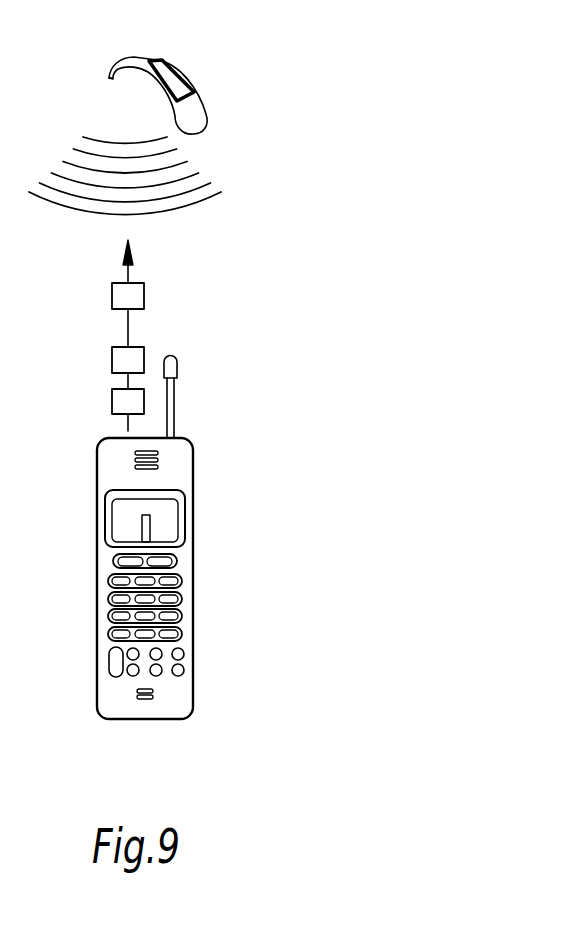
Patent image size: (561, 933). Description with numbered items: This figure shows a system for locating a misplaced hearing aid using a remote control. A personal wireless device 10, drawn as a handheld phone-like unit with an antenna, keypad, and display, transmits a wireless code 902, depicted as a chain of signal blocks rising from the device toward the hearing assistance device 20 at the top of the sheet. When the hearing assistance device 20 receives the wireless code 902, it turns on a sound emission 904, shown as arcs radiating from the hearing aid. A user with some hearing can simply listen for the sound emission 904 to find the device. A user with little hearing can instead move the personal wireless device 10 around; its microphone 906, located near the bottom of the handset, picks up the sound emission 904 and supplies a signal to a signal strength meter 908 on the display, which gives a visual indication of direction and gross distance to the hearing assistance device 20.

The hearing assistance device 20 is at (140, 57).
The sound emission 904 is at (177, 211).
The wireless code 902 is at (112, 357).
The personal wireless device 10 is at (140, 559).
The signal strength meter 908 is at (142, 516).
The microphone 906 is at (145, 700).